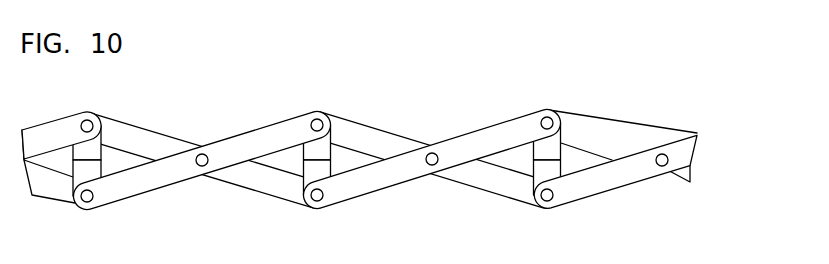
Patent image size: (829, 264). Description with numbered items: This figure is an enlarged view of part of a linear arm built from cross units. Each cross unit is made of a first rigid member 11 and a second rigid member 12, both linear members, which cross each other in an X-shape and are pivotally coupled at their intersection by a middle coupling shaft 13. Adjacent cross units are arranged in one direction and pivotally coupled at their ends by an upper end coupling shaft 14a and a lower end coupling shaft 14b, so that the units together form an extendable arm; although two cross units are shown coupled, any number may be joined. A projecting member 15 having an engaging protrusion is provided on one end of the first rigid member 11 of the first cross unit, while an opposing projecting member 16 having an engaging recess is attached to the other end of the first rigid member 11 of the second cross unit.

The first rigid member 11 is at (143, 137).
The second rigid member 12 is at (483, 138).
The middle coupling shaft 13 is at (430, 152).
The upper end coupling shaft 14a is at (312, 114).
The lower end coupling shaft 14b is at (323, 197).
The projecting member 15 is at (308, 167).
The opposing projecting member 16 is at (340, 147).